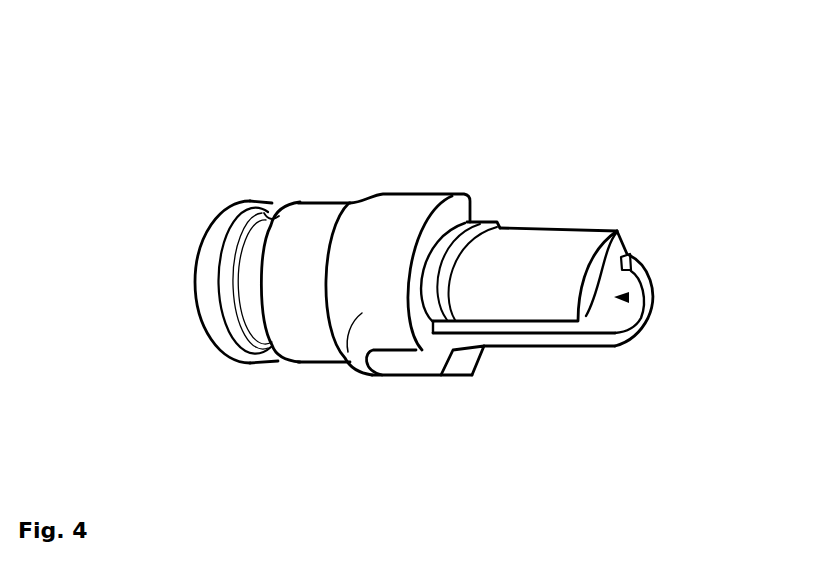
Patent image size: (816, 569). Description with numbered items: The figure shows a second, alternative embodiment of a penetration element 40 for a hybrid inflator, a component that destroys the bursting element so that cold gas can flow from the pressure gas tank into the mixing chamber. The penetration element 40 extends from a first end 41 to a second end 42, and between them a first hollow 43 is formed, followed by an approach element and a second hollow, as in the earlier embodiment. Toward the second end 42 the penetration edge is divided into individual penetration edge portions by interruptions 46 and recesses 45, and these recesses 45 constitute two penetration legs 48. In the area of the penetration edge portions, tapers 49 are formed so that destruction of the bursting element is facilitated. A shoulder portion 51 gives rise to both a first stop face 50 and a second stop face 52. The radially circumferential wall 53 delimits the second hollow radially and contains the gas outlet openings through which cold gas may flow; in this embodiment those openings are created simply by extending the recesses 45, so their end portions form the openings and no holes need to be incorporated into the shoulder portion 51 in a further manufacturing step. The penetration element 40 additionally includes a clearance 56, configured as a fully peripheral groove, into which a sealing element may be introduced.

The penetration element 40 is at (158, 86).
The first end 41 is at (200, 256).
The second end 42 is at (656, 295).
The first hollow 43 is at (628, 299).
The recess 45 is at (473, 338).
The interruption 46 is at (595, 324).
The penetration leg 48 is at (538, 250).
The taper 49 is at (602, 248).
The first stop face 50 is at (453, 211).
The shoulder portion 51 is at (400, 210).
The second stop face 52 is at (349, 205).
The radially circumferential wall 53 is at (345, 360).
The clearance 56 is at (274, 209).